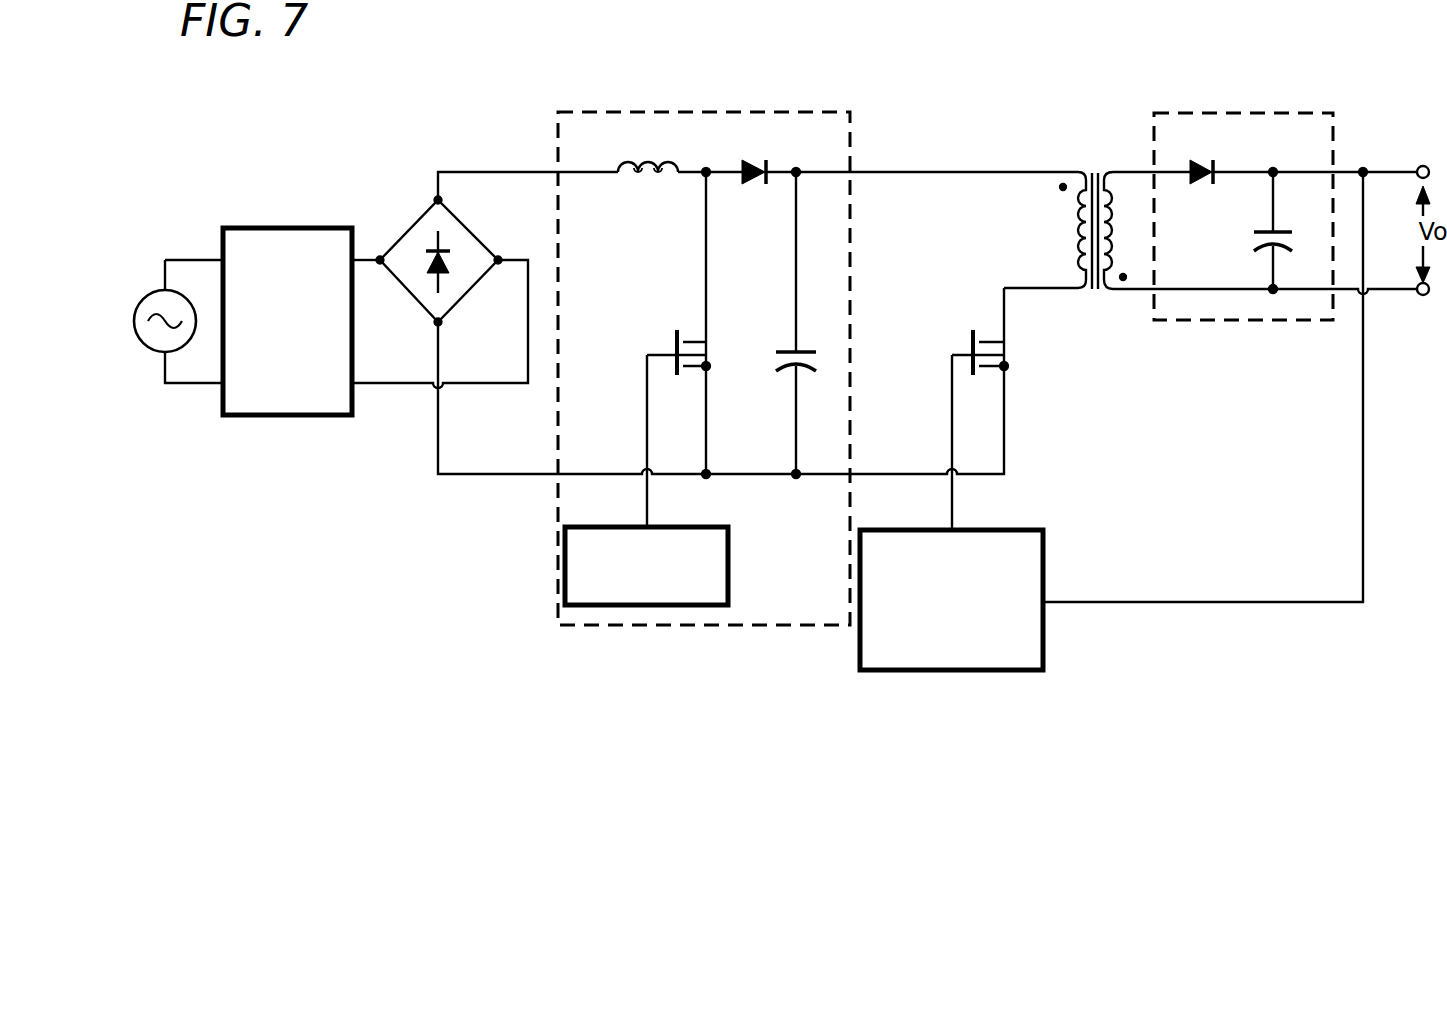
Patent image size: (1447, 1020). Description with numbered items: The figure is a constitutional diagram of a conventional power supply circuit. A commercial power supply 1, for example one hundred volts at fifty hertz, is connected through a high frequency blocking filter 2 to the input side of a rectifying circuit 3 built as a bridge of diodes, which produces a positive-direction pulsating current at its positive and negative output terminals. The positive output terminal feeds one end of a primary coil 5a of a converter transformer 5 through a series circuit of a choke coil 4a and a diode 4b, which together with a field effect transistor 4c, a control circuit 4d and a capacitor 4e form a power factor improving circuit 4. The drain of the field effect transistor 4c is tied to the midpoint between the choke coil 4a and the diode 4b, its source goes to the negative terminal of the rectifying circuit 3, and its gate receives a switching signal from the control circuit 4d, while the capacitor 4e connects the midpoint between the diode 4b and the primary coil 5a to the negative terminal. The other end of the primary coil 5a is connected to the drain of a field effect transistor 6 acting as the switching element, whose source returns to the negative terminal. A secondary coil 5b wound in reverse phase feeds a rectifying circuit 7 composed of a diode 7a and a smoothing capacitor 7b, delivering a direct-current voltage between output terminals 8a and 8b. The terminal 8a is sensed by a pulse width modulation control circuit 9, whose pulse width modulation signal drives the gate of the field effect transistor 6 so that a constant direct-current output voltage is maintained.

The commercial power supply 1 is at (136, 352).
The high frequency blocking filter 2 is at (311, 228).
The rectifying circuit 3 is at (427, 237).
The power factor improving circuit 4 is at (795, 110).
The choke coil 4a is at (648, 186).
The diode 4b is at (752, 186).
The field effect transistor 4c is at (688, 330).
The control circuit 4d is at (730, 563).
The capacitor 4e is at (805, 347).
The converter transformer 5 is at (1095, 162).
The primary coil 5a is at (1067, 218).
The secondary coil 5b is at (1110, 292).
The field effect transistor 6 is at (1014, 348).
The rectifying circuit 7 is at (1297, 110).
The diode 7a is at (1200, 190).
The smoothing capacitor 7b is at (1250, 240).
The direct-current voltage output terminal 8a is at (1423, 165).
The direct-current voltage output terminal 8b is at (1423, 297).
The pulse width modulation control circuit 9 is at (955, 672).